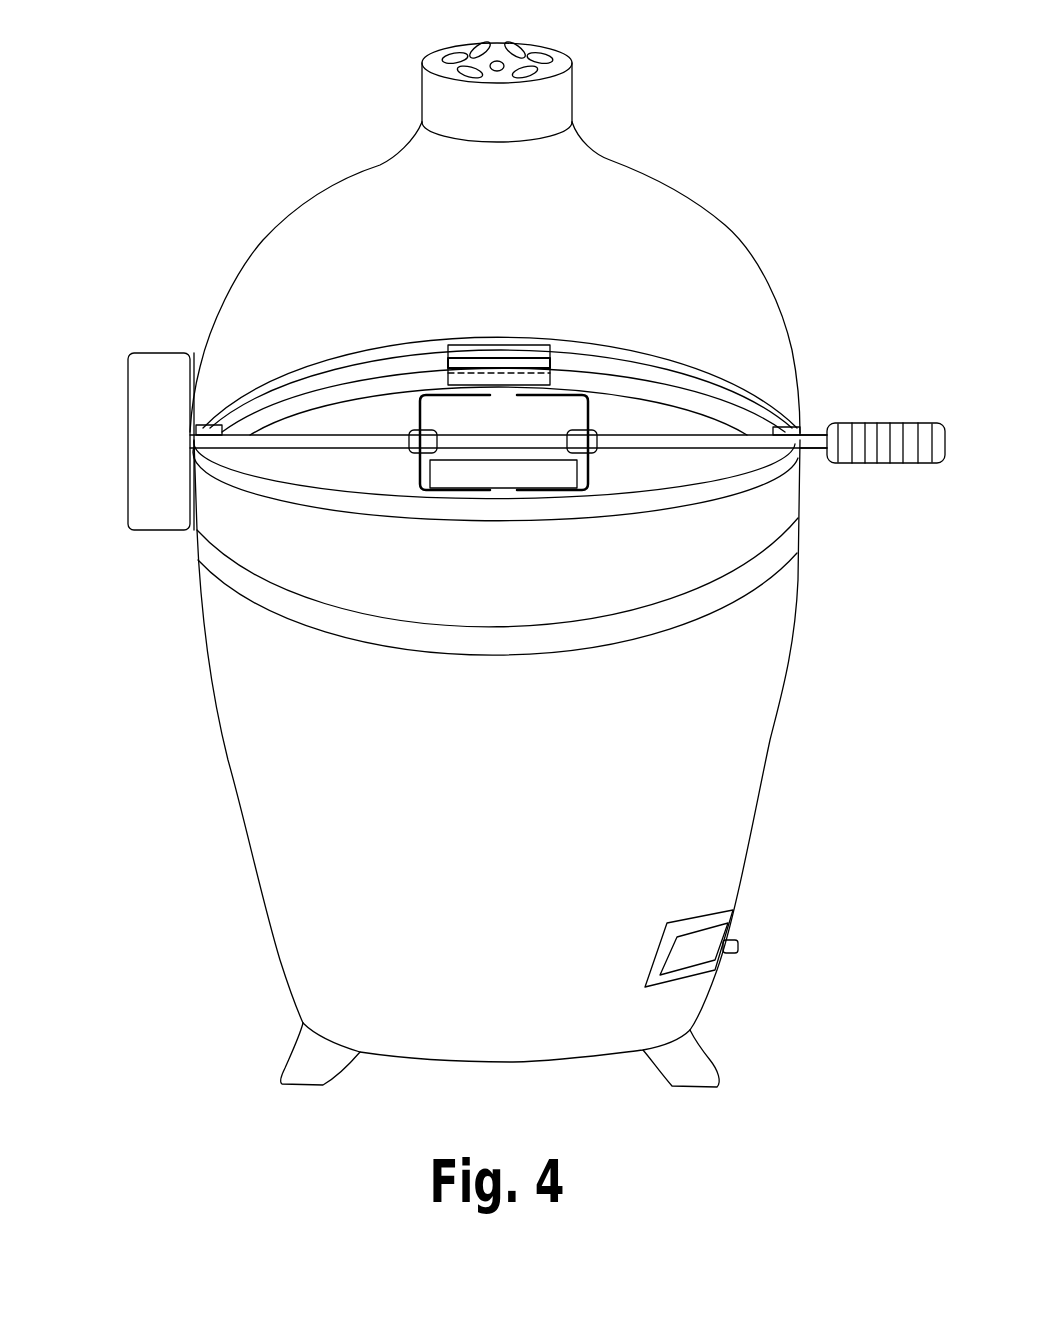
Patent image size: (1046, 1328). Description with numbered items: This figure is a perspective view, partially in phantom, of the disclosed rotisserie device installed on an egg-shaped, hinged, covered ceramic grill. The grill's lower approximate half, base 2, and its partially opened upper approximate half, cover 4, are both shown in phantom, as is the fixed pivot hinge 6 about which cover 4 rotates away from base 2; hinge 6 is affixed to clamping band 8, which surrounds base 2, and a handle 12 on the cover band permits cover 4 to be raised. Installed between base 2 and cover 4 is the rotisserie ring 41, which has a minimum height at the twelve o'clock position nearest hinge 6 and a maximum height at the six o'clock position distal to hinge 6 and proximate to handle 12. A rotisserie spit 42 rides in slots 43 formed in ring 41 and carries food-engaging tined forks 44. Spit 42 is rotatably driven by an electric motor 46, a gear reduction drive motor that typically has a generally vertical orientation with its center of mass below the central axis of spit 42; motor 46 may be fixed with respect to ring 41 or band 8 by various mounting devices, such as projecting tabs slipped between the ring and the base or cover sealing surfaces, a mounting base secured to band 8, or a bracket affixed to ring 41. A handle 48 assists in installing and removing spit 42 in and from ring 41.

The base 2 is at (238, 812).
The cover 4 is at (703, 207).
The fixed pivot hinge 6 is at (503, 345).
The clamping band 8 is at (393, 633).
The handle 12 is at (565, 496).
The rotisserie ring 41 is at (800, 425).
The rotisserie spit 42 is at (805, 436).
The slots 43 is at (222, 425).
The tined forks 44 is at (462, 489).
The electric motor 46 is at (128, 442).
The handle 48 is at (923, 423).